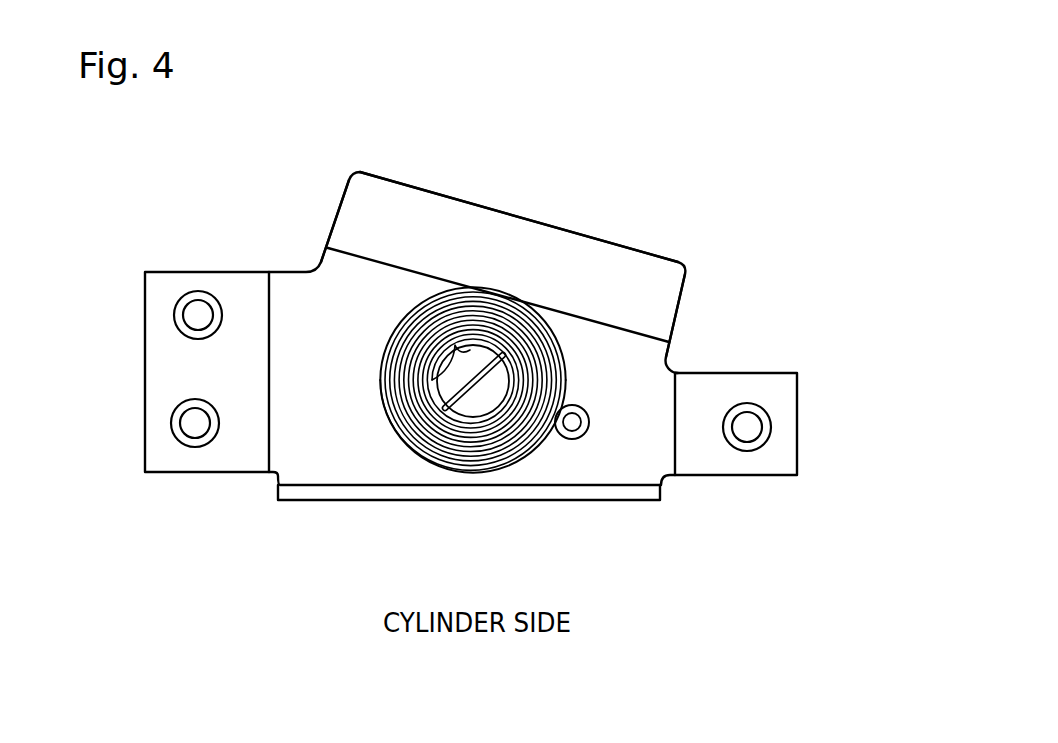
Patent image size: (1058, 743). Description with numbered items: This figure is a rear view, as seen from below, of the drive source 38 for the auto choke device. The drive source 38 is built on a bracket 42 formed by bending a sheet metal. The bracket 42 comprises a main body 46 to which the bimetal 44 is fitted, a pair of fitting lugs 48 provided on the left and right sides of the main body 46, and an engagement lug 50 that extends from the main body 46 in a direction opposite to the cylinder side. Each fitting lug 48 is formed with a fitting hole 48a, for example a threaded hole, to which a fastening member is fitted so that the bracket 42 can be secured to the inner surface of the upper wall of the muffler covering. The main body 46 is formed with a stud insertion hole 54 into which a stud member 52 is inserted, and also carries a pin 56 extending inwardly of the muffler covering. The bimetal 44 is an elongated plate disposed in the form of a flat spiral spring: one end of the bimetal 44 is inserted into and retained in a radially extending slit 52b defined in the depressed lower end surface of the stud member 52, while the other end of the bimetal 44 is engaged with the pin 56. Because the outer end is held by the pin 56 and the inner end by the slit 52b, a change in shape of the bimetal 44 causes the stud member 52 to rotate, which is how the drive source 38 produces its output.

The drive source 38 is at (718, 272).
The bracket 42 is at (353, 172).
The bimetal 44 is at (484, 468).
The main body 46 is at (312, 435).
The fitting lugs 48 is at (180, 283).
The fitting hole 48a is at (192, 326).
The engagement lug 50 is at (557, 243).
The stud member 52 is at (467, 355).
The slit 52b is at (423, 397).
The stud insertion hole 54 is at (448, 360).
The pin 56 is at (572, 435).